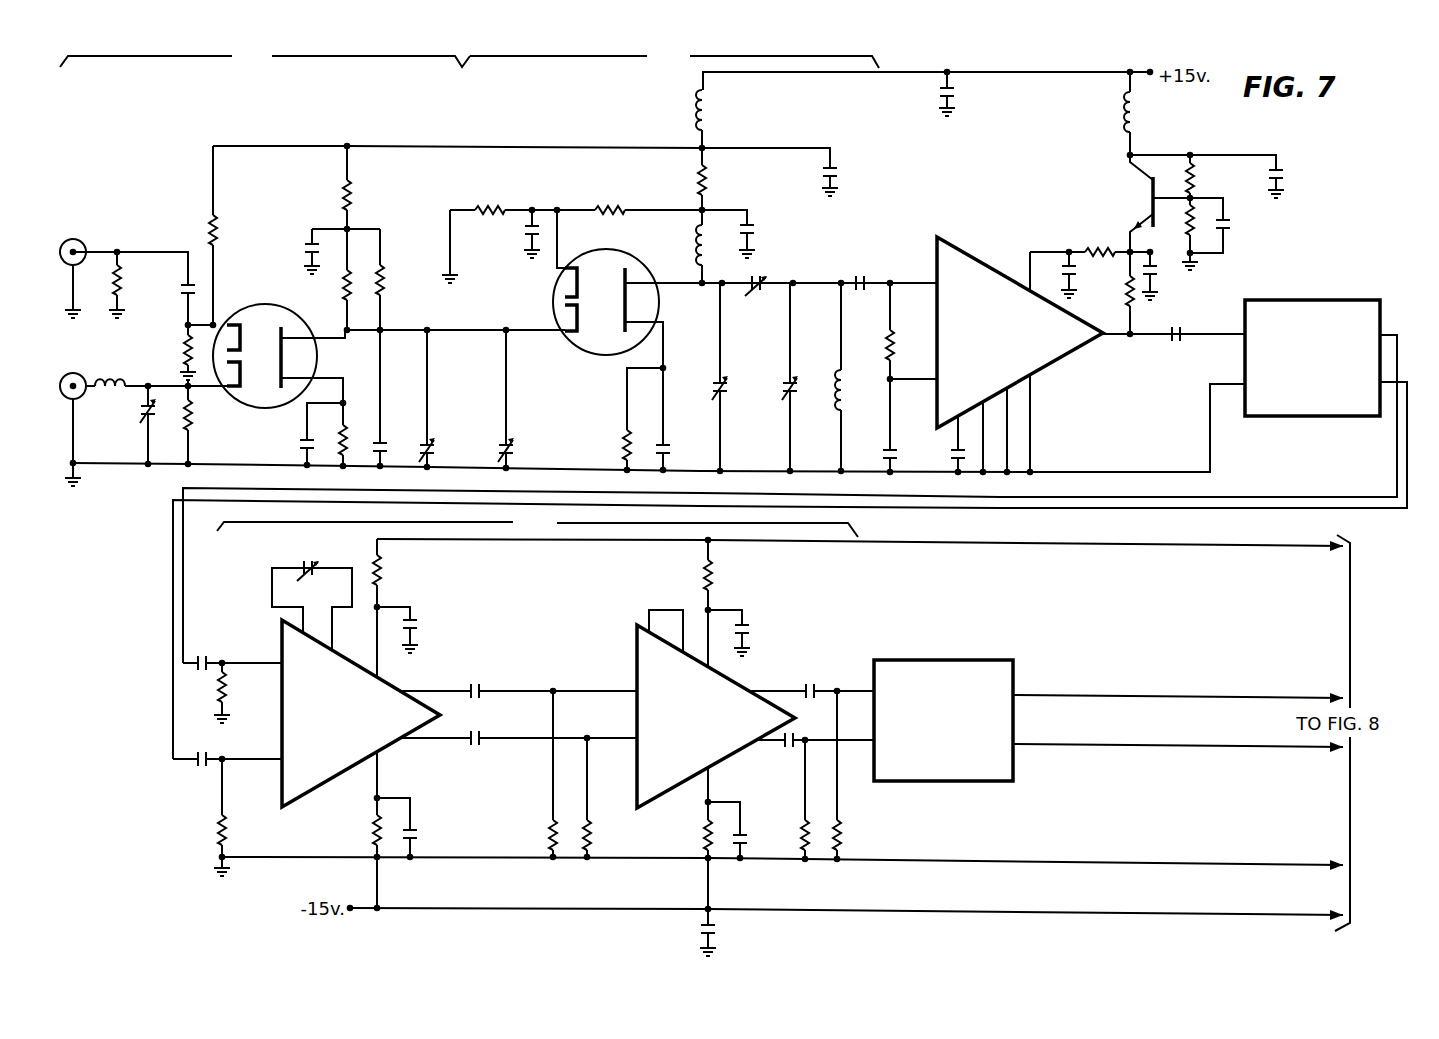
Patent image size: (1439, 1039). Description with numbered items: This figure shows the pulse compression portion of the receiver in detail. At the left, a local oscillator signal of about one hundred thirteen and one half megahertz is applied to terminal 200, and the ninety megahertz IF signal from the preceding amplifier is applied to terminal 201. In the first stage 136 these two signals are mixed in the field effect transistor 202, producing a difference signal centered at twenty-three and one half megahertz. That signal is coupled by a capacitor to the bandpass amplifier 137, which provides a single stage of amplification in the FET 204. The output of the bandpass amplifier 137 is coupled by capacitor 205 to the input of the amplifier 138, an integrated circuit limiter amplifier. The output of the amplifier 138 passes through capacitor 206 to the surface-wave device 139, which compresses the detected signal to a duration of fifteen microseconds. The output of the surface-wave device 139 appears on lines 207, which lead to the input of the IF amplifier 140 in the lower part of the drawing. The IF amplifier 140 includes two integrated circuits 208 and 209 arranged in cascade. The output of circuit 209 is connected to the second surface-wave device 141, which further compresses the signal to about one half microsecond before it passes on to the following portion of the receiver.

The first stage 136 is at (265, 56).
The bandpass amplifier 137 is at (674, 56).
The amplifier 138 is at (972, 260).
The surface-wave device 139 is at (1312, 358).
The IF amplifier 140 is at (537, 524).
The second surface-wave device 141 is at (943, 720).
The terminal 200 is at (84, 252).
The terminal 201 is at (81, 381).
The field effect transistor 202 is at (291, 304).
The FET 204 is at (632, 258).
The capacitor 205 is at (770, 281).
The capacitor 206 is at (1188, 322).
The lines 207 is at (1399, 348).
The integrated circuit 208 is at (383, 753).
The integrated circuit 209 is at (730, 758).